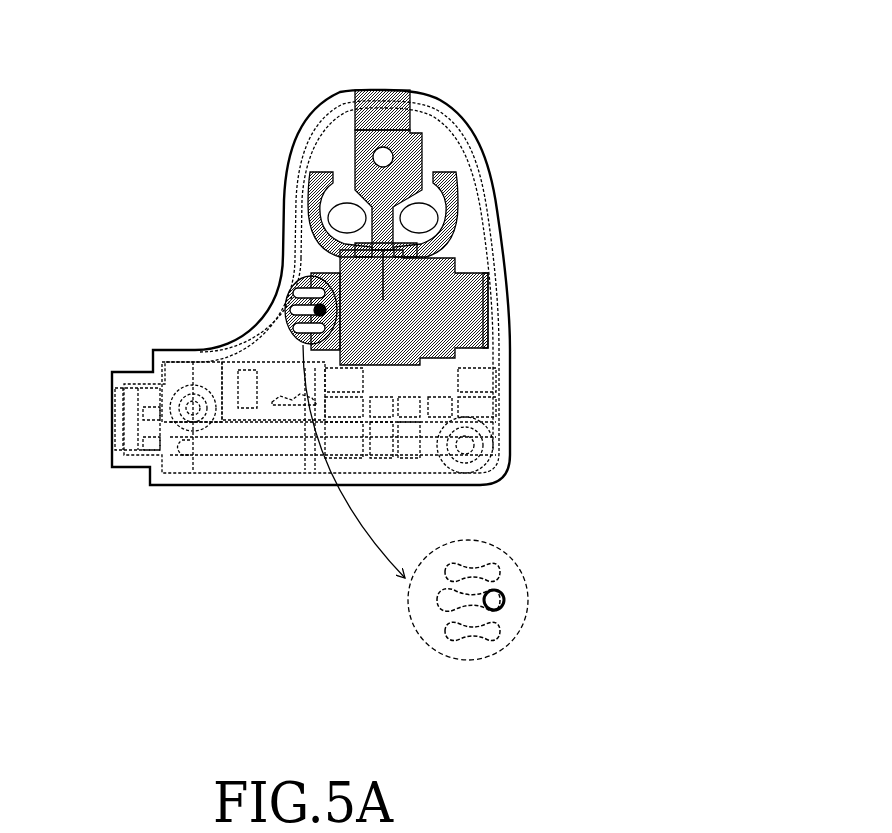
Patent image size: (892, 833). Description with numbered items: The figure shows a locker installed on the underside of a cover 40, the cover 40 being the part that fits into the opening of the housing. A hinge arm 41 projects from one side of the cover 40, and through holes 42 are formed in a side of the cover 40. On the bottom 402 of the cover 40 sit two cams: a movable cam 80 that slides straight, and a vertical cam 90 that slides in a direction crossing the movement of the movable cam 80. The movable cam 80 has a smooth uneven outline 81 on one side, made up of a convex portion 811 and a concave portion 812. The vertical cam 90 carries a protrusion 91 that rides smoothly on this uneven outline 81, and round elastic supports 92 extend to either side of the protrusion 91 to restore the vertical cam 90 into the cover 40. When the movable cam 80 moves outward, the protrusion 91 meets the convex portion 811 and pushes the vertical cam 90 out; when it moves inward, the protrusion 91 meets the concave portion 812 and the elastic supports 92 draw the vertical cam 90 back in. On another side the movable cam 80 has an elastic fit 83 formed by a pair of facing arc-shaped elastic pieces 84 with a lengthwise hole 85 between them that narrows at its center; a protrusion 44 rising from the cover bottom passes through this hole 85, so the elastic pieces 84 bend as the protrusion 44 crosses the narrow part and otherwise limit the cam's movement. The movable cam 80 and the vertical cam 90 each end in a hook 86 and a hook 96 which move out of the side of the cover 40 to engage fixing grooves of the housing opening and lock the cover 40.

The cover 40 is at (178, 335).
The hinge arm 41 is at (128, 372).
The through holes 42 is at (415, 97).
The bottom 402 is at (307, 240).
The protrusion 44 is at (497, 599).
The movable cam 80 is at (433, 270).
The uneven outline 81 is at (308, 230).
The convex portion 811 is at (307, 258).
The concave portion 812 is at (383, 195).
The elastic fit 83 is at (426, 628).
The elastic pieces 84 is at (472, 612).
The hole 85 is at (447, 600).
The hook 86 is at (495, 290).
The vertical cam 90 is at (377, 113).
The protrusion 91 is at (398, 218).
The elastic supports 92 is at (326, 220).
The hook 96 is at (372, 90).